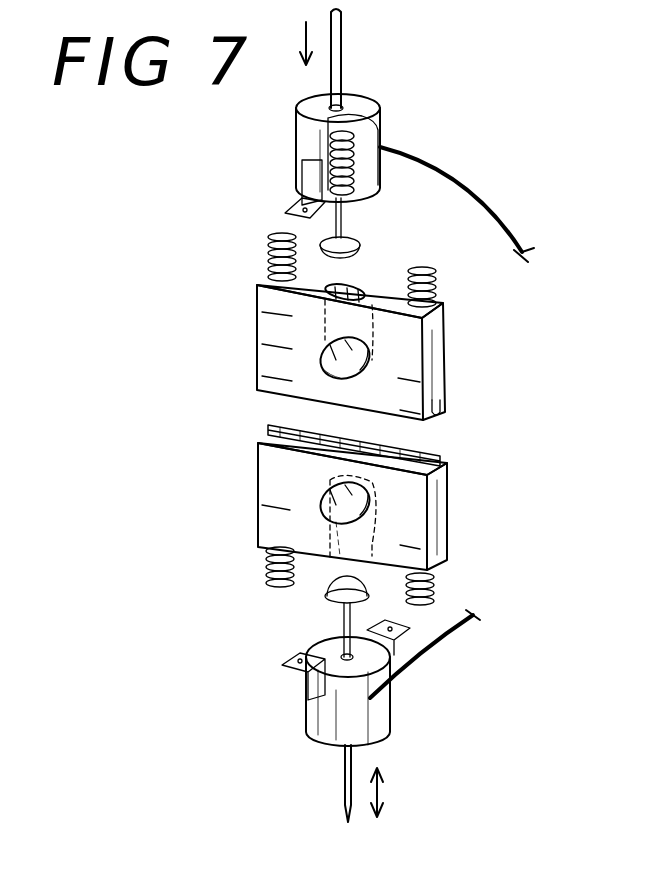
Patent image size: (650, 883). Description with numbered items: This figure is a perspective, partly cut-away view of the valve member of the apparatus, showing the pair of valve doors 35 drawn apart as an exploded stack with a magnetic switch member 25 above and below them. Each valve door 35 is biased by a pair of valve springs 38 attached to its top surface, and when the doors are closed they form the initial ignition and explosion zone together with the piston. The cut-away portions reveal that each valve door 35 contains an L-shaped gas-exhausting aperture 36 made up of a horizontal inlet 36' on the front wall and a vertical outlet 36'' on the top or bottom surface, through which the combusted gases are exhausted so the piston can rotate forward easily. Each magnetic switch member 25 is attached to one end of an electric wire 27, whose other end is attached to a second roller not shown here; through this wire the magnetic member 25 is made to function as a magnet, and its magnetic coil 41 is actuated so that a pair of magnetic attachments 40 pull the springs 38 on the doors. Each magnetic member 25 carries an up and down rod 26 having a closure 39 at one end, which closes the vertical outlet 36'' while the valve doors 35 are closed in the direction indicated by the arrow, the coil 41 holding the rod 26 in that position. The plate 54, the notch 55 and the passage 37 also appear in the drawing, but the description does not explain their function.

The magnetic switch member 25 is at (298, 142).
The up and down rod 26 is at (345, 42).
The electric wire 27 is at (470, 182).
The valve door 35 is at (448, 366).
The L-shaped gas-exhausting aperture 36 is at (284, 430).
The horizontal inlet 36' is at (266, 361).
The vertical outlet 36'' is at (407, 266).
The passage 37 is at (330, 565).
The valve spring 38 is at (266, 264).
The closure 39 is at (362, 242).
The magnetic attachment 40 is at (290, 208).
The magnetic coil 41 is at (350, 152).
The plate 54 is at (440, 462).
The notch 55 is at (446, 414).